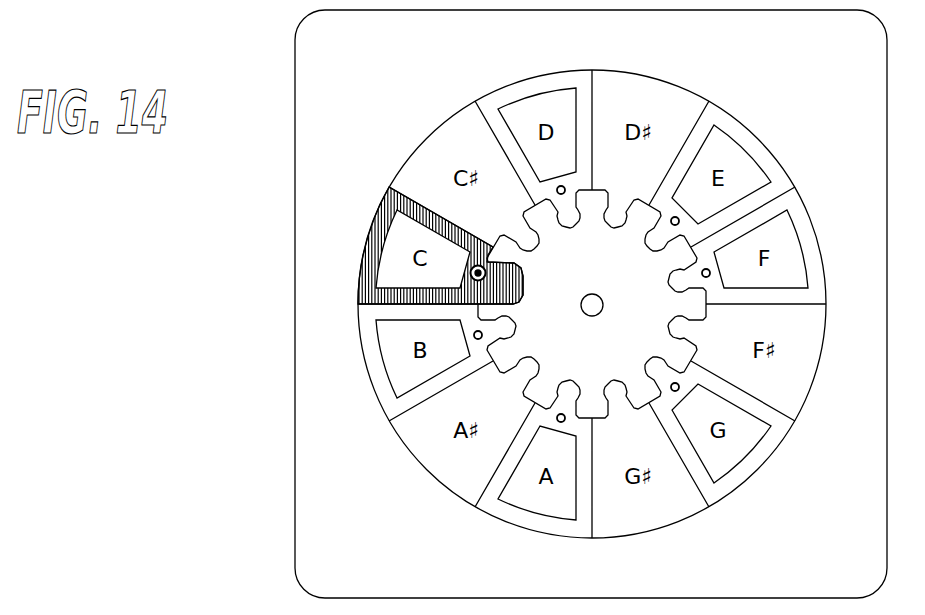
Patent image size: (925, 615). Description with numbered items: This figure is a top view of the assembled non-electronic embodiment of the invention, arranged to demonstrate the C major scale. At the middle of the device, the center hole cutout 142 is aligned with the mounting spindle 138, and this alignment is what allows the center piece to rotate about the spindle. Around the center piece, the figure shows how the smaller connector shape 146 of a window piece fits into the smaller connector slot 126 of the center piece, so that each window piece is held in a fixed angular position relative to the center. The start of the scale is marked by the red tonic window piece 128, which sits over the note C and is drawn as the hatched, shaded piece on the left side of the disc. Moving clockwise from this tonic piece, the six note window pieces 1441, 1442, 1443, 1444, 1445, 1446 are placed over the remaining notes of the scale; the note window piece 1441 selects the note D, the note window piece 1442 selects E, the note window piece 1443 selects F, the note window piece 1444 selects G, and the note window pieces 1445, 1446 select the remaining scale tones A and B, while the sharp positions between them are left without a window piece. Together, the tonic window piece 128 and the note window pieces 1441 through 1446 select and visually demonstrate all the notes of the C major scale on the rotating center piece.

The red tonic window piece 128 is at (350, 247).
The smaller connector slot 126 is at (592, 304).
The smaller connector shape 146 is at (600, 252).
The center hole cutout 142 is at (597, 328).
The mounting spindle 138 is at (592, 305).
The note window piece 1441 is at (539, 68).
The note window piece 1442 is at (772, 135).
The note window piece 1443 is at (830, 244).
The note window piece 1444 is at (768, 477).
The note window piece 1445 is at (533, 544).
The note window piece 1446 is at (356, 378).